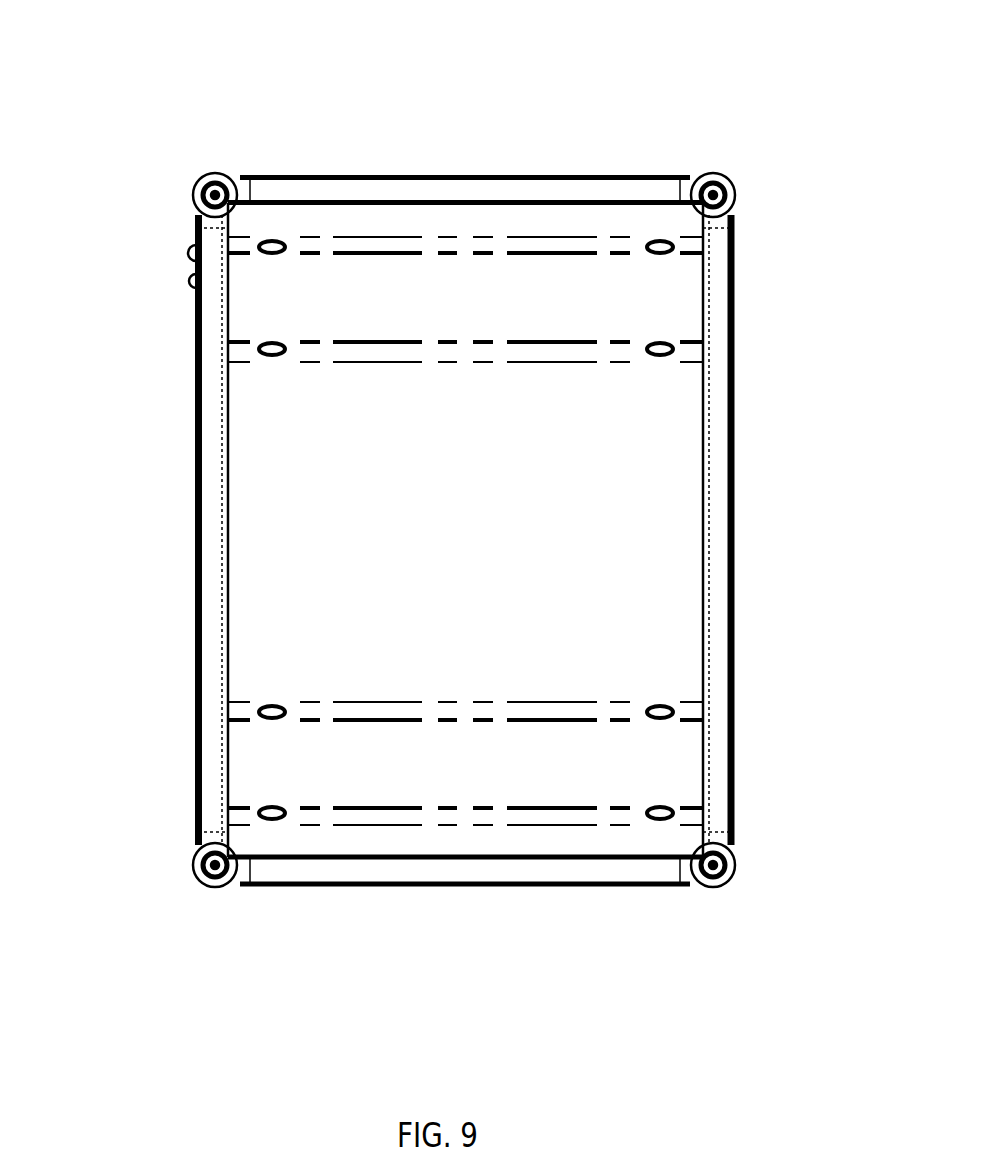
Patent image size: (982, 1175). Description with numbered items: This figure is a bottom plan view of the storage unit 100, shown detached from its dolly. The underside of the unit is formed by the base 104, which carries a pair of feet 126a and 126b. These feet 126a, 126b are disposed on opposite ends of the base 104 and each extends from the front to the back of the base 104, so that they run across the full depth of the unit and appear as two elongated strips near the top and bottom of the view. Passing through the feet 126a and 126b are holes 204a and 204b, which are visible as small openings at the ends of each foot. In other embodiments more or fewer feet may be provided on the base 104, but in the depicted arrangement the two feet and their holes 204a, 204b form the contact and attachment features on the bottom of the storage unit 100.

The storage unit 100 is at (110, 75).
The base 104 is at (461, 550).
The foot 126a is at (476, 312).
The foot 126b is at (478, 776).
The holes 204a is at (675, 362).
The holes 204b is at (262, 360).